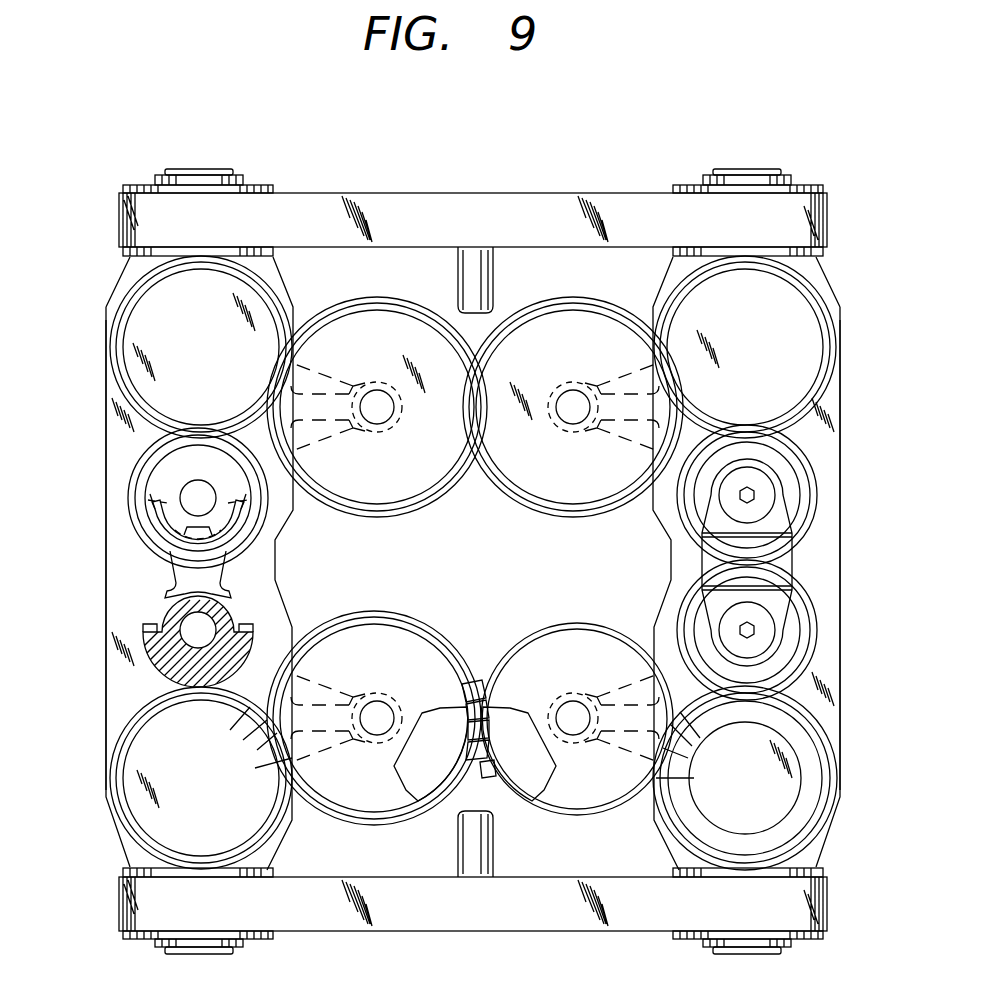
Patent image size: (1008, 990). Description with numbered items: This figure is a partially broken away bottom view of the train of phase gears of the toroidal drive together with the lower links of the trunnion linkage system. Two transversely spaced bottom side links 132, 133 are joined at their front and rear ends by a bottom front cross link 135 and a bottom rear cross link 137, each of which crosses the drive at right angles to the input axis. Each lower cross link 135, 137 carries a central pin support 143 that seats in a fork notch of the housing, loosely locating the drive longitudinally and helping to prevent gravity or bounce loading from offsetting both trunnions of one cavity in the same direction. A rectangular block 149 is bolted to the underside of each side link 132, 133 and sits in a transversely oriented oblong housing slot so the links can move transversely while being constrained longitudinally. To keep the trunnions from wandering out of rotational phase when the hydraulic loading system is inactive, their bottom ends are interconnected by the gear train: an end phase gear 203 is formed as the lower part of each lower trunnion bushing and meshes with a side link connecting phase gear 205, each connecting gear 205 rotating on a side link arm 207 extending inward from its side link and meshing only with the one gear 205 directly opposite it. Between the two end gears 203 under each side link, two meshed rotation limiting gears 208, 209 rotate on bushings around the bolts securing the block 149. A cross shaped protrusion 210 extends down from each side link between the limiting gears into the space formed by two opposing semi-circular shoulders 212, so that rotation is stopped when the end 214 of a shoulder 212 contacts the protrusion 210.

The bottom front cross link 135 is at (440, 204).
The bottom rear cross link 137 is at (497, 905).
The bottom side link 132 is at (106, 540).
The bottom side link 133 is at (828, 592).
The central pin support 143 is at (486, 263).
The rectangular block 149 is at (779, 577).
The end phase gear 203 is at (214, 357).
The side link connecting phase gear 205 is at (449, 457).
The side link arm 207 is at (375, 509).
The rotation limiting gear 208 is at (229, 477).
The rotation limiting gear 209 is at (162, 668).
The cross shaped protrusion 210 is at (238, 581).
The semi-circular shoulder 212 is at (168, 592).
The shoulder end 214 is at (152, 500).